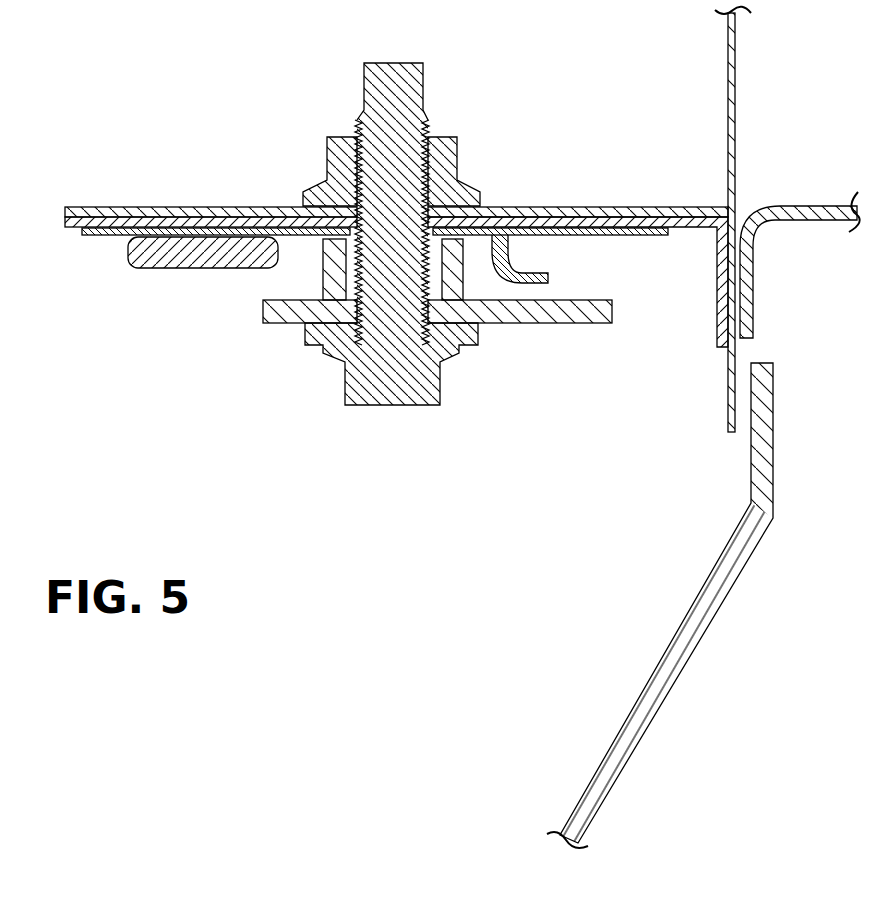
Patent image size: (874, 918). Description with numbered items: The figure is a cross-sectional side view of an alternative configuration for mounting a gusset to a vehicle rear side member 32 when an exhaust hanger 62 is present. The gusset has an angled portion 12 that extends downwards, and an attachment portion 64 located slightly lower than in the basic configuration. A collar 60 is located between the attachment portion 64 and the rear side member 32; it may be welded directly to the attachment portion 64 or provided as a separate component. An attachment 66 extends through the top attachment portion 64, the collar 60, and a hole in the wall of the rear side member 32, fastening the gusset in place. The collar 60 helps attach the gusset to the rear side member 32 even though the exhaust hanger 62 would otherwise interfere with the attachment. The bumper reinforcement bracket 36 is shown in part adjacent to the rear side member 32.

The angled portion 12 is at (622, 740).
The rear side member 32 is at (167, 215).
The bumper reinforcement bracket 36 is at (818, 205).
The collar 60 is at (328, 270).
The exhaust hanger 62 is at (150, 270).
The attachment portion 64 is at (578, 323).
The attachment 66 is at (407, 85).